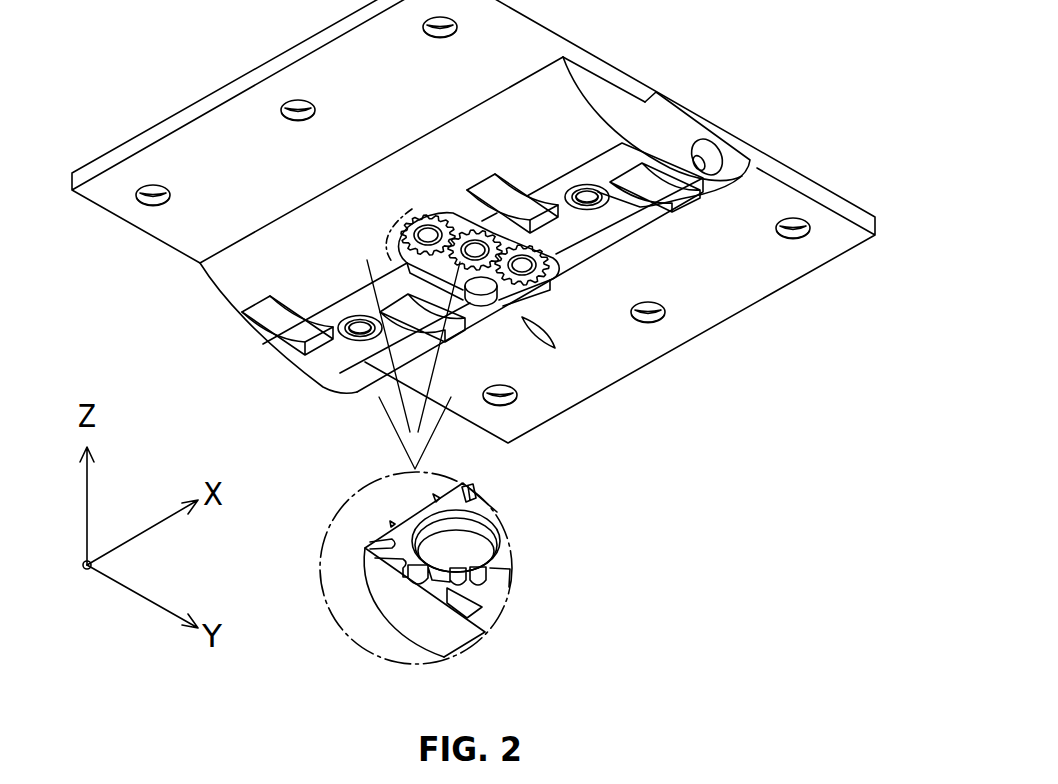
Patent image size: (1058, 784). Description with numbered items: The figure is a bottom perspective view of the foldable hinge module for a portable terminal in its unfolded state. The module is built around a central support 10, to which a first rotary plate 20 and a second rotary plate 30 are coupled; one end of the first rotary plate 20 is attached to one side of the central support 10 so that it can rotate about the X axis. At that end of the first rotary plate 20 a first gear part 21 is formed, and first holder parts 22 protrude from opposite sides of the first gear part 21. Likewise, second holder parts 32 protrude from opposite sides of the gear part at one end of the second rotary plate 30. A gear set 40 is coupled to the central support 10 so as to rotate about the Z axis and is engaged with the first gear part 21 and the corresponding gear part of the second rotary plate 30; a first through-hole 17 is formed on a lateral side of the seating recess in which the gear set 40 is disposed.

The central support 10 is at (660, 137).
The first through-hole 17 is at (412, 597).
The first rotary plate 20 is at (167, 230).
The first gear part 21 is at (405, 580).
The first holder parts 22 is at (468, 205).
The second rotary plate 30 is at (765, 277).
The second holder parts 32 is at (450, 338).
The gear set 40 is at (515, 287).